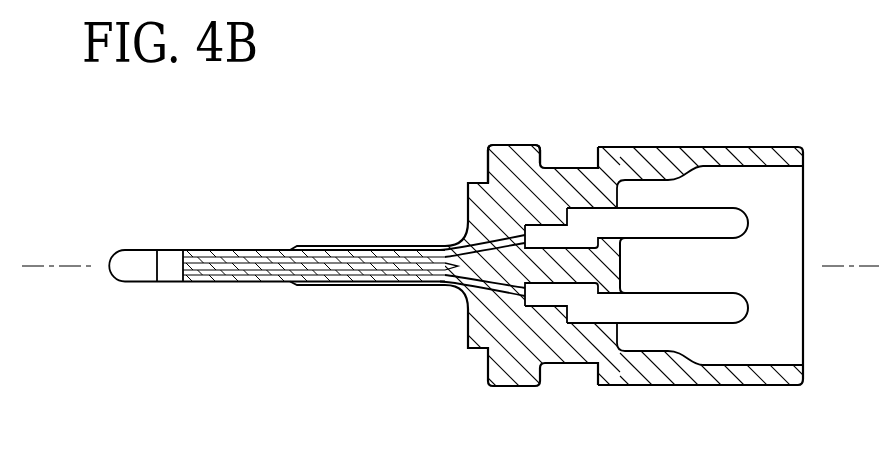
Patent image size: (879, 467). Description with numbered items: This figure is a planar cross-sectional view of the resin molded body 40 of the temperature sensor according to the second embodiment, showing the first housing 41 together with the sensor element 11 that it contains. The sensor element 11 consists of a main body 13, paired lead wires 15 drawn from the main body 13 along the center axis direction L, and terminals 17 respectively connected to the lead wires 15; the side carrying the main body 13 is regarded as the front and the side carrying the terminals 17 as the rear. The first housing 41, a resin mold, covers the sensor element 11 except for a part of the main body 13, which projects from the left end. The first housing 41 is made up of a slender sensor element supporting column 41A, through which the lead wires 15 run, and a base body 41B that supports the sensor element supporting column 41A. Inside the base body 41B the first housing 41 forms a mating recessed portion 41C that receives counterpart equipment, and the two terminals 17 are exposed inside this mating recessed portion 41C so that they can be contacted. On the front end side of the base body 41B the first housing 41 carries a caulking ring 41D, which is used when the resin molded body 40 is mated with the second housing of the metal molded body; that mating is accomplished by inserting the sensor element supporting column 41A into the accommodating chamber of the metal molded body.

The sensor element 11 is at (269, 240).
The main body 13 is at (146, 250).
The lead wires 15 is at (497, 241).
The terminals 17 is at (700, 207).
The resin molded body 40 is at (556, 240).
The first housing 41 is at (571, 157).
The sensor element supporting column 41A is at (362, 246).
The base body 41B is at (630, 147).
The mating recessed portion 41C is at (792, 352).
The caulking ring 41D is at (516, 146).
The center axis direction L is at (48, 268).